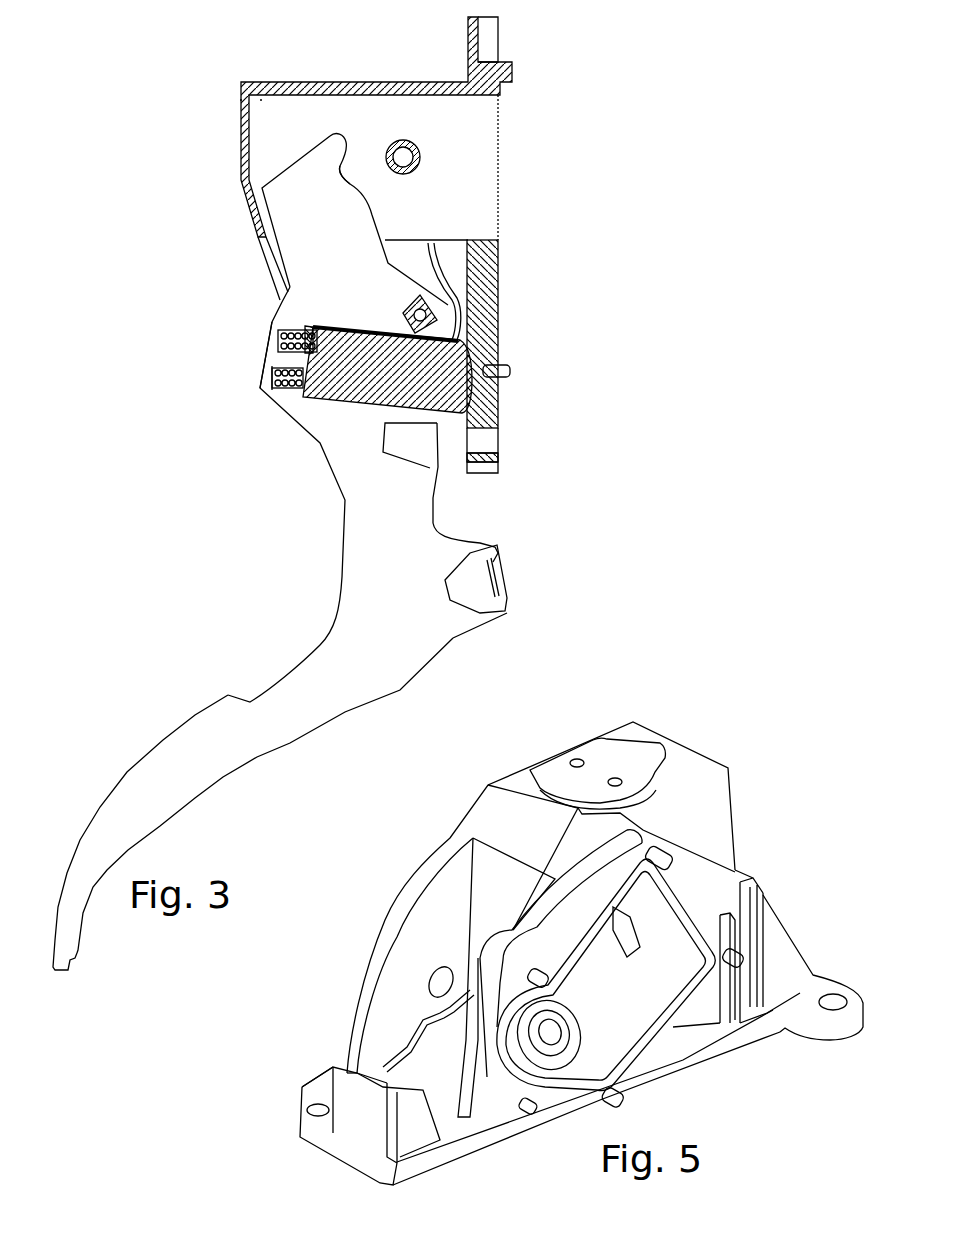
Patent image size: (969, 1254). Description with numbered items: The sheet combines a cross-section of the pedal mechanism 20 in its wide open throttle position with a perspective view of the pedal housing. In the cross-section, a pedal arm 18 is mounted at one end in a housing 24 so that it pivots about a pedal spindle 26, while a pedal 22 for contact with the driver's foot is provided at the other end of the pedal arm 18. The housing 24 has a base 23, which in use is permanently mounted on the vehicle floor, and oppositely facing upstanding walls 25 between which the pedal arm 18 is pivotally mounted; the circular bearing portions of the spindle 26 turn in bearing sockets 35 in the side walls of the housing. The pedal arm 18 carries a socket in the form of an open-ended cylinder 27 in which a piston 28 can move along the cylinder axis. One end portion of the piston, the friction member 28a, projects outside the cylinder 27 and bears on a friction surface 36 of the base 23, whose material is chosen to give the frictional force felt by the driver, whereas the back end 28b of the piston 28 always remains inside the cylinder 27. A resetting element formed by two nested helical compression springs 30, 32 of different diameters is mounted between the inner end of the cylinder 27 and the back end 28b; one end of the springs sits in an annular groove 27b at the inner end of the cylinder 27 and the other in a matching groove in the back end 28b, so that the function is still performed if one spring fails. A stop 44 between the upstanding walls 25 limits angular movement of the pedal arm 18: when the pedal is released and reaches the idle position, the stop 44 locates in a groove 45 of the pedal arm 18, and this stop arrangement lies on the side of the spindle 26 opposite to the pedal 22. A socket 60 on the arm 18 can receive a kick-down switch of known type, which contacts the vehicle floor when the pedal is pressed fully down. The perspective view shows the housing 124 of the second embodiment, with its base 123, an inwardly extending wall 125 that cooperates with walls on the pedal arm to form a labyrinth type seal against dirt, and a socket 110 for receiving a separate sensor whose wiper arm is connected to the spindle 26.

In FIG. 3, the pedal arm 18 is at (340, 712).
In FIG. 3, the pedal mechanism 20 is at (202, 152).
In FIG. 3, the pedal 22 is at (125, 771).
In FIG. 3, the base 23 is at (490, 307).
In FIG. 5, the base 23 is at (463, 1145).
In FIG. 3, the housing 24 is at (391, 73).
In FIG. 3, the upstanding walls 25 is at (306, 131).
In FIG. 5, the upstanding walls 25 is at (383, 950).
In FIG. 3, the pedal spindle 26 is at (433, 313).
In FIG. 3, the open-ended cylinder 27 is at (315, 398).
In FIG. 3, the annular groove 27b is at (278, 335).
In FIG. 3, the piston 28 is at (380, 403).
In FIG. 3, the friction member 28a is at (465, 355).
In FIG. 3, the back end 28b is at (347, 330).
In FIG. 3, the helical compression spring 30 is at (260, 390).
In FIG. 3, the helical compression spring 32 is at (272, 367).
In FIG. 5, the bearing sockets 35 is at (440, 977).
In FIG. 3, the friction surface 36 is at (483, 384).
In FIG. 3, the stop 44 is at (417, 148).
In FIG. 3, the groove 45 is at (345, 172).
In FIG. 3, the socket 60 is at (495, 570).
In FIG. 5, the socket 110 is at (653, 922).
In FIG. 5, the base 123 is at (343, 1095).
In FIG. 5, the housing 124 is at (693, 750).
In FIG. 5, the inwardly extending wall 125 is at (483, 858).